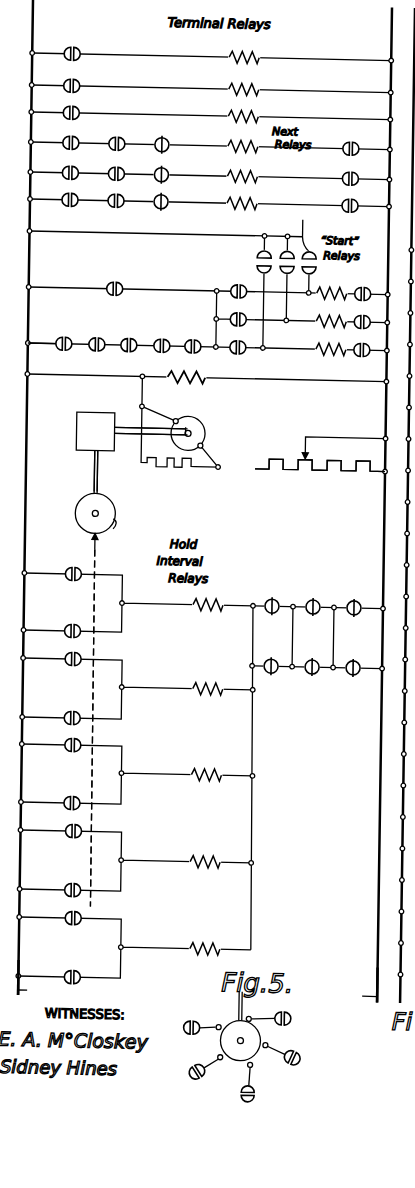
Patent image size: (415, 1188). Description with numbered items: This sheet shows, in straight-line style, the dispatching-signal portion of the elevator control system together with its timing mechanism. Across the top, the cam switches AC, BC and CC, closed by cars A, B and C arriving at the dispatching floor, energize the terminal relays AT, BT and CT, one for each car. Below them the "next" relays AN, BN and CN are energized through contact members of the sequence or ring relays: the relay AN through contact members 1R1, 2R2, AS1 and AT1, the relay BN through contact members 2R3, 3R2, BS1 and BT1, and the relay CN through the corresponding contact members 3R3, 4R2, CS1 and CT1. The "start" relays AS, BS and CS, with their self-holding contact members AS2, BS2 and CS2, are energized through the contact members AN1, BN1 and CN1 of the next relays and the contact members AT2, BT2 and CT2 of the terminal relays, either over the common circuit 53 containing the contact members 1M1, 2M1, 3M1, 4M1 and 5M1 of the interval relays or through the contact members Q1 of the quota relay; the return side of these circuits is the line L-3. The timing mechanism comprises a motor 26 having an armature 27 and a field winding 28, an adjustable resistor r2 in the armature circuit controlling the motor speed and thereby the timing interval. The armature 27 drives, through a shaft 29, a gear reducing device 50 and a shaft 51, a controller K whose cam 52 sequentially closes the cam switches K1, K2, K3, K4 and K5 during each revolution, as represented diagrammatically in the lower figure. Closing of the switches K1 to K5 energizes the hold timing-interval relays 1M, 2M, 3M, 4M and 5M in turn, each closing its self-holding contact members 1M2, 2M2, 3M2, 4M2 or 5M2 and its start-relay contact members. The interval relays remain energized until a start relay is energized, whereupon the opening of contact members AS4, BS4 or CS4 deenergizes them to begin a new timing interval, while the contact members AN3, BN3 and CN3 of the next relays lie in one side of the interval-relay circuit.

In FIG. 4, the cam switch AC is at (91, 46).
In FIG. 4, the cam switch BC is at (91, 78).
In FIG. 4, the cam switch CC is at (89, 105).
In FIG. 4, the terminal relay AT is at (267, 45).
In FIG. 4, the terminal relay BT is at (239, 77).
In FIG. 4, the terminal relay CT is at (238, 105).
In FIG. 4, the contact members 1R1 is at (81, 136).
In FIG. 4, the contact members 2R2 is at (123, 136).
In FIG. 4, the contact members AS1 is at (167, 137).
In FIG. 4, the next relay AN is at (237, 136).
In FIG. 4, the contact members AT1 is at (355, 140).
In FIG. 4, the contact members 2R3 is at (79, 166).
In FIG. 4, the contact members 3R2 is at (122, 167).
In FIG. 4, the contact members BS1 is at (168, 167).
In FIG. 4, the next relay BN is at (238, 167).
In FIG. 4, the contact members BT1 is at (357, 171).
In FIG. 4, the contact 3R3 is at (78, 194).
In FIG. 4, the contact 4R2 is at (122, 194).
In FIG. 4, the start relay contact CS1 is at (168, 196).
In FIG. 4, the next relay CN is at (237, 194).
In FIG. 4, the terminal relay contact CT1 is at (357, 198).
In FIG. 4, the start relay contact CS2 is at (262, 248).
In FIG. 4, the self-holding contact members BS2 is at (281, 261).
In FIG. 4, the self-holding contact members AS2 is at (291, 244).
In FIG. 4, the contact members Q1 is at (114, 279).
In FIG. 4, the contact members AN1 is at (227, 284).
In FIG. 4, the contact members BN1 is at (233, 312).
In FIG. 4, the next relay contact CN1 is at (233, 340).
In FIG. 4, the start relay AS is at (332, 281).
In FIG. 4, the contact members AT2 is at (364, 282).
In FIG. 4, the start relay BS is at (335, 300).
In FIG. 4, the contact members BT2 is at (362, 311).
In FIG. 4, the start relay CS is at (337, 331).
In FIG. 4, the terminal relay contact CT2 is at (363, 340).
In FIG. 4, the contact members 1M1 is at (56, 334).
In FIG. 4, the start relay contact members 2M1 is at (90, 335).
In FIG. 4, the contact members 3M1 is at (123, 335).
In FIG. 4, the contact members 4M1 is at (156, 335).
In FIG. 4, the contact members 5M1 is at (189, 335).
In FIG. 4, the common circuit 53 is at (38, 345).
In FIG. 4, the field winding 28 is at (212, 367).
In FIG. 4, the motor 26 is at (236, 414).
In FIG. 4, the armature 27 is at (211, 427).
In FIG. 4, the shaft 29 is at (134, 441).
In FIG. 4, the gear reducing device 50 is at (83, 442).
In FIG. 4, the shaft 51 is at (101, 477).
In FIG. 4, the cam 52 is at (86, 519).
In FIG. 5, the cam 52 is at (252, 1049).
In FIG. 4, the controller K is at (147, 511).
In FIG. 4, the adjustable resistor r2 is at (302, 471).
In FIG. 4, the cam switch K1 is at (91, 566).
In FIG. 5, the cam switch K1 is at (290, 1056).
In FIG. 4, the cam switch K2 is at (92, 654).
In FIG. 5, the cam switch K2 is at (278, 1017).
In FIG. 4, the cam switch K3 is at (91, 740).
In FIG. 5, the cam switch K3 is at (202, 1019).
In FIG. 4, the cam switch K4 is at (91, 826).
In FIG. 5, the cam switch K4 is at (191, 1067).
In FIG. 4, the cam switch K5 is at (91, 913).
In FIG. 5, the cam switch K5 is at (262, 1082).
In FIG. 4, the interval relay 1M is at (208, 597).
In FIG. 4, the interval relay 2M is at (204, 681).
In FIG. 4, the interval relay 3M is at (201, 769).
In FIG. 4, the interval relay 4M is at (203, 853).
In FIG. 4, the interval relay 5M is at (203, 942).
In FIG. 4, the self-holding contact members 1M2 is at (58, 623).
In FIG. 4, the self-holding contact members 2M2 is at (56, 710).
In FIG. 4, the self-holding contact members 3M2 is at (57, 795).
In FIG. 4, the self-holding contact members 4M2 is at (55, 883).
In FIG. 4, the self-holding contact members 5M2 is at (57, 968).
In FIG. 4, the contact members AN3 is at (264, 599).
In FIG. 4, the contact members BN3 is at (308, 600).
In FIG. 4, the next relay contact CN3 is at (351, 600).
In FIG. 4, the contact members AS4 is at (267, 659).
In FIG. 4, the contact members BS4 is at (308, 660).
In FIG. 4, the start relay contact CS4 is at (351, 660).
In FIG. 4, the negative line conductor L-3 is at (354, 987).